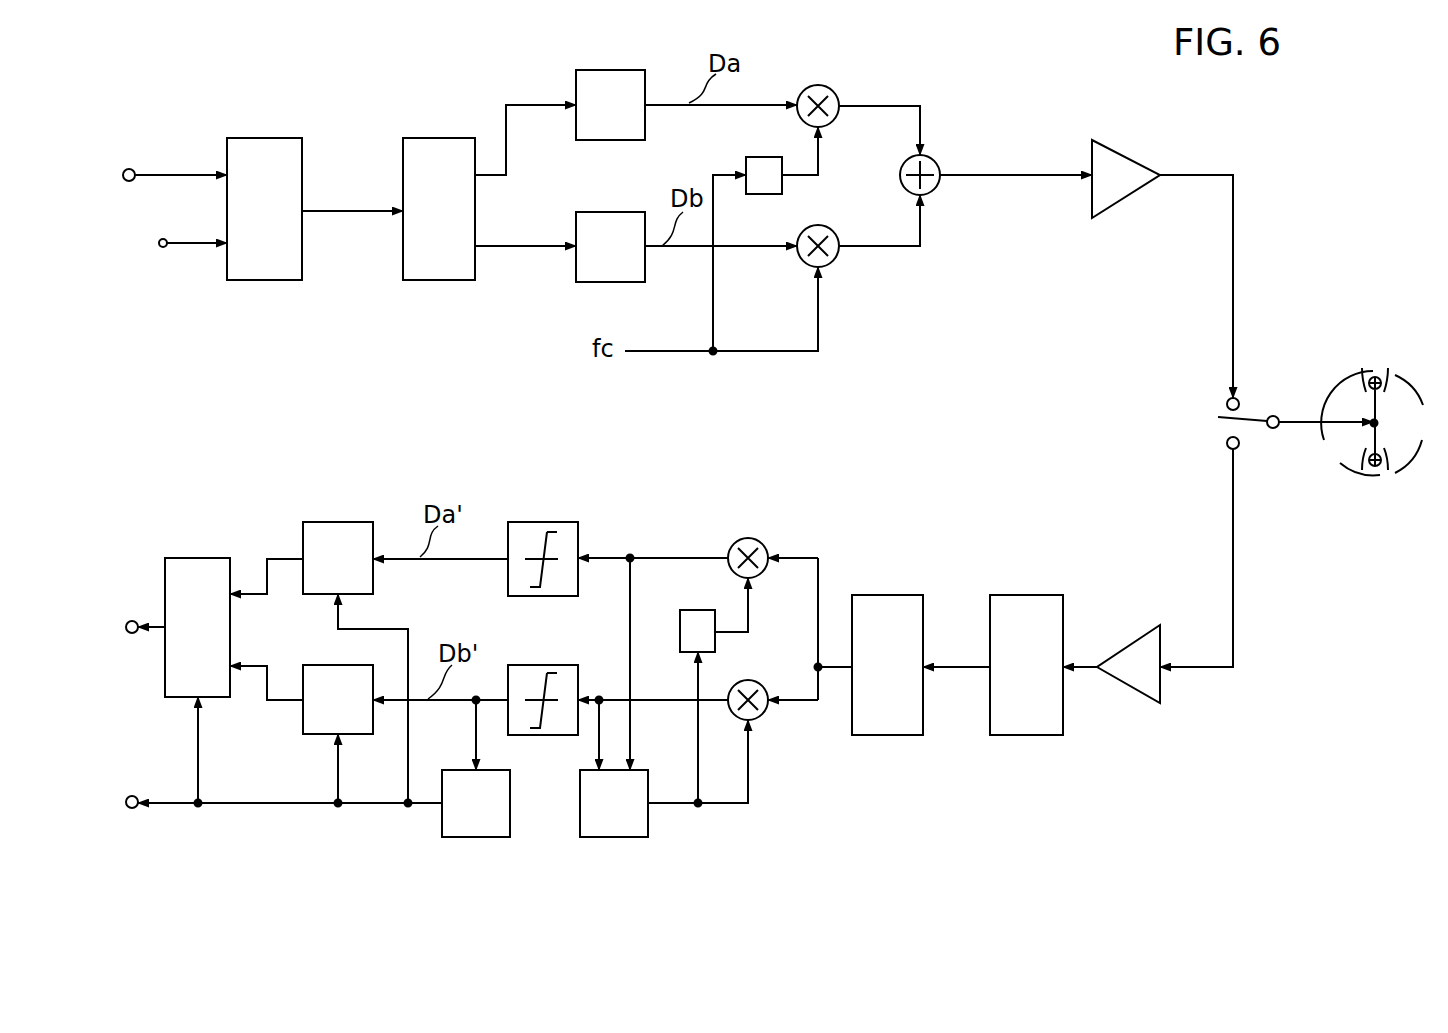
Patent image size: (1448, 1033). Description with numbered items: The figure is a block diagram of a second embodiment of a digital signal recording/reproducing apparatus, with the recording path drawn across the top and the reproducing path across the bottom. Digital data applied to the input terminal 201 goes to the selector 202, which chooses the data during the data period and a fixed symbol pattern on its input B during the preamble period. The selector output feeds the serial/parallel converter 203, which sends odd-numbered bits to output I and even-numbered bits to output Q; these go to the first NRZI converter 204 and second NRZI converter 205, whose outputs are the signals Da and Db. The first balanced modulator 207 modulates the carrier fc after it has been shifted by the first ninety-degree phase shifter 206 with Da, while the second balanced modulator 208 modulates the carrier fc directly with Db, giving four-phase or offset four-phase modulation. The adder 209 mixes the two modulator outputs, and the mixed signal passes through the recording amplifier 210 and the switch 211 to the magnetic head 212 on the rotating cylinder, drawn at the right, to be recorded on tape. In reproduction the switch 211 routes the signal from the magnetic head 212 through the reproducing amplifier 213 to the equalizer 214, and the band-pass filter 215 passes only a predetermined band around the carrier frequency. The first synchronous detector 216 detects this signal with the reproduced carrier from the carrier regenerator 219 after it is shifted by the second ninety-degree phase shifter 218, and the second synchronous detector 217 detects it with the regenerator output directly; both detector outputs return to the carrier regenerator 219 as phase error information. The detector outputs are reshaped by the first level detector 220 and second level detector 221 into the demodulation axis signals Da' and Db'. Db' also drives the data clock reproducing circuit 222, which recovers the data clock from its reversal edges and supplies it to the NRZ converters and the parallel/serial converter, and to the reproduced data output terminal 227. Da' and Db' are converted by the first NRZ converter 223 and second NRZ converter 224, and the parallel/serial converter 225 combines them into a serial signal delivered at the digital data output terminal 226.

The input terminal 201 is at (129, 168).
The selector 202 is at (263, 281).
The serial/parallel converter 203 is at (432, 281).
The first NRZI converter 204 is at (585, 141).
The second NRZI converter 205 is at (590, 283).
The first 90° phase shifter 206 is at (782, 185).
The first balanced modulator 207 is at (834, 88).
The second balanced modulator 208 is at (832, 259).
The adder 209 is at (938, 160).
The recording amplifier 210 is at (1130, 198).
The switch 211 is at (1259, 399).
The magnetic head 212 is at (1391, 437).
The reproducing amplifier 213 is at (1130, 641).
The equalizer 214 is at (1025, 737).
The band-pass filter 215 is at (886, 737).
The first synchronous detector 216 is at (757, 540).
The second synchronous detector 217 is at (763, 717).
The second 90° phase shifter 218 is at (715, 640).
The carrier regenerator 219 is at (632, 838).
The first level detector 220 is at (540, 521).
The second level detector 221 is at (540, 664).
The data clock reproducing circuit 222 is at (480, 838).
The first NRZ converter 223 is at (338, 521).
The second NRZ converter 224 is at (350, 735).
The parallel/serial converter 225 is at (200, 556).
The digital data output terminal 226 is at (128, 620).
The reproduced data output terminal 227 is at (128, 796).